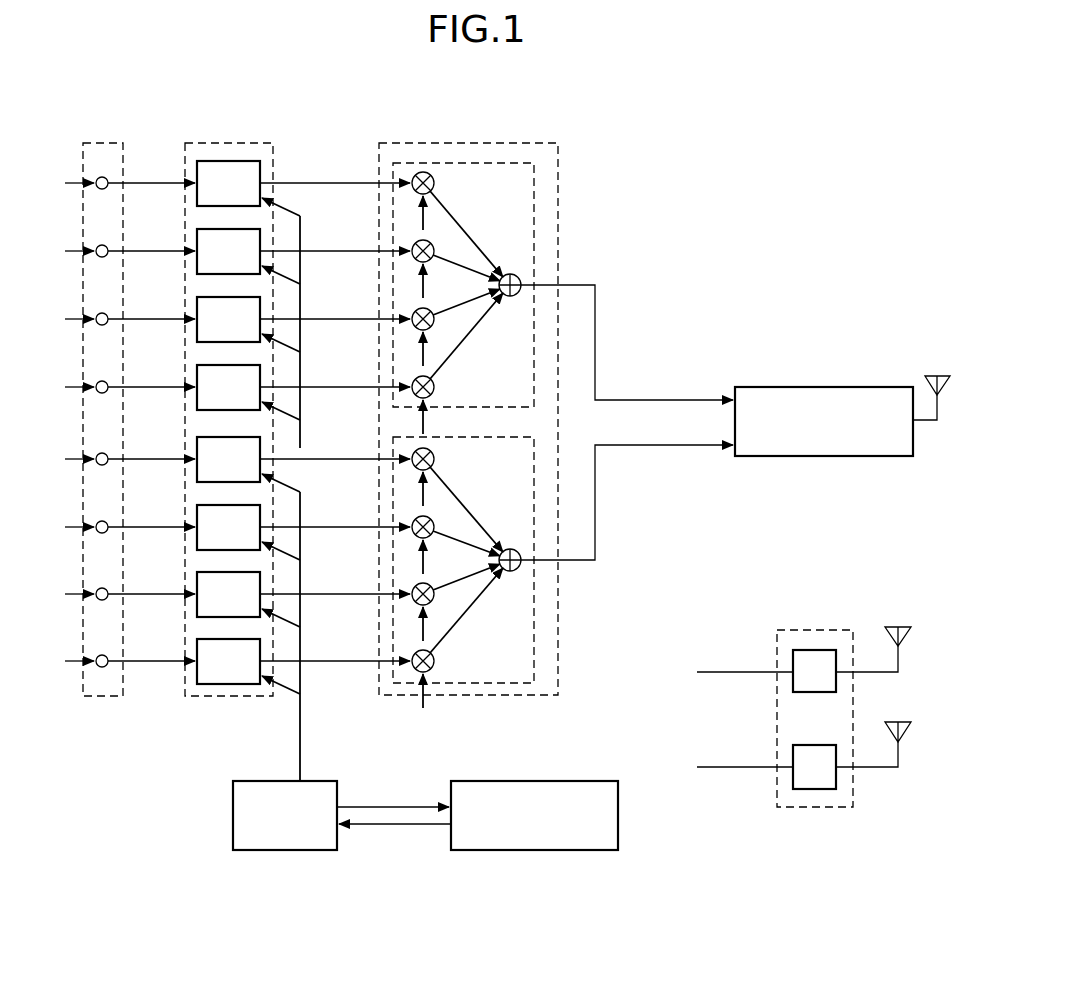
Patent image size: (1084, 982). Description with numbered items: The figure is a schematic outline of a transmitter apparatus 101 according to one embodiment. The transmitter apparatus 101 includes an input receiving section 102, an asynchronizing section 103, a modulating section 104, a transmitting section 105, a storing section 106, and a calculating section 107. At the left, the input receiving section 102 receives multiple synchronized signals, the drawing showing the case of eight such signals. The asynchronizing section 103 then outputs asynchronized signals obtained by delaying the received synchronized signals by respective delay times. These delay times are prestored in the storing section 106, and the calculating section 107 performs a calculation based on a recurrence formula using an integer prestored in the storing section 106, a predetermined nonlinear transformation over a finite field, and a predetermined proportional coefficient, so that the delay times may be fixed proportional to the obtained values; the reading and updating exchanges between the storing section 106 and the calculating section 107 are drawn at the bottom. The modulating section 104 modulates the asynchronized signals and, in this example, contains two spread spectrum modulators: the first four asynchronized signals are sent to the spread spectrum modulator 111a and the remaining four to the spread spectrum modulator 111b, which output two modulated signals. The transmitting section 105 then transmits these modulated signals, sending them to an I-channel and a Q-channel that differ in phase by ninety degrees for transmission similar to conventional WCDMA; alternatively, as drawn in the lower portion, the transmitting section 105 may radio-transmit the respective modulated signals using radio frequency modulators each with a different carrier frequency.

The transmitter apparatus 101 is at (680, 195).
The input receiving section 102 is at (103, 158).
The asynchronizing section 103 is at (222, 143).
The modulating section 104 is at (478, 143).
The spread spectrum modulator 111a is at (534, 178).
The spread spectrum modulator 111b is at (534, 440).
The transmitting section 105 is at (757, 387).
The storing section 106 is at (233, 798).
The calculating section 107 is at (590, 781).